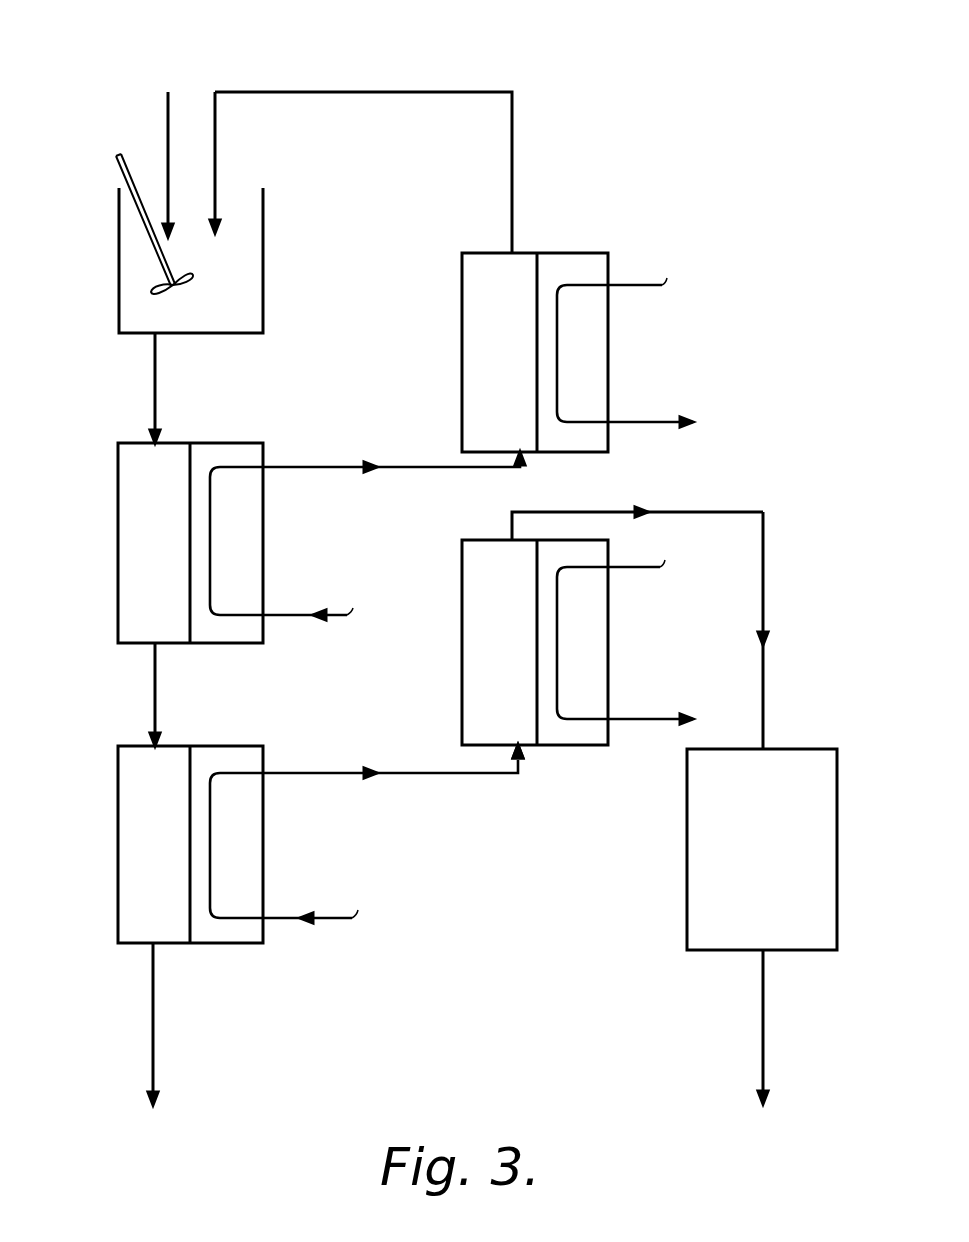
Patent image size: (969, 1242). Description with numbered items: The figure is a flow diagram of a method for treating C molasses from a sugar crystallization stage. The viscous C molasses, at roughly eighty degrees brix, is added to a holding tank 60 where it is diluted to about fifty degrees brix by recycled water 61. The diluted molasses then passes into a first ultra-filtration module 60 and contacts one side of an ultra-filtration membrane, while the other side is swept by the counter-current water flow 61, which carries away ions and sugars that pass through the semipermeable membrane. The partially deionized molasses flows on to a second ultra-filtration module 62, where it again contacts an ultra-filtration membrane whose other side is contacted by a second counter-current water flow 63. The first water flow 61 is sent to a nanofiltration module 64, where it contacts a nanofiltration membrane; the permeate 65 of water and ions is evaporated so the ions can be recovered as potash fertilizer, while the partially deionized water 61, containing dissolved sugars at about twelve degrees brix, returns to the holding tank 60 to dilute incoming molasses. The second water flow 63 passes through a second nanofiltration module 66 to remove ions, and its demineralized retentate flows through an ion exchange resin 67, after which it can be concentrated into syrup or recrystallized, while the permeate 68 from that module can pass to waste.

The holding tank / first ultra-filtration module 60 is at (247, 264).
The recycled water / counter-current water flow 61 is at (371, 91).
The second ultra-filtration module 62 is at (118, 839).
The counter-current water flow 63 is at (335, 920).
The nanofiltration module 64 is at (462, 345).
The permeate 65 is at (650, 285).
The second nanofiltration module 66 is at (462, 657).
The ion exchange resin 67 is at (837, 848).
The permeate 68 is at (650, 567).